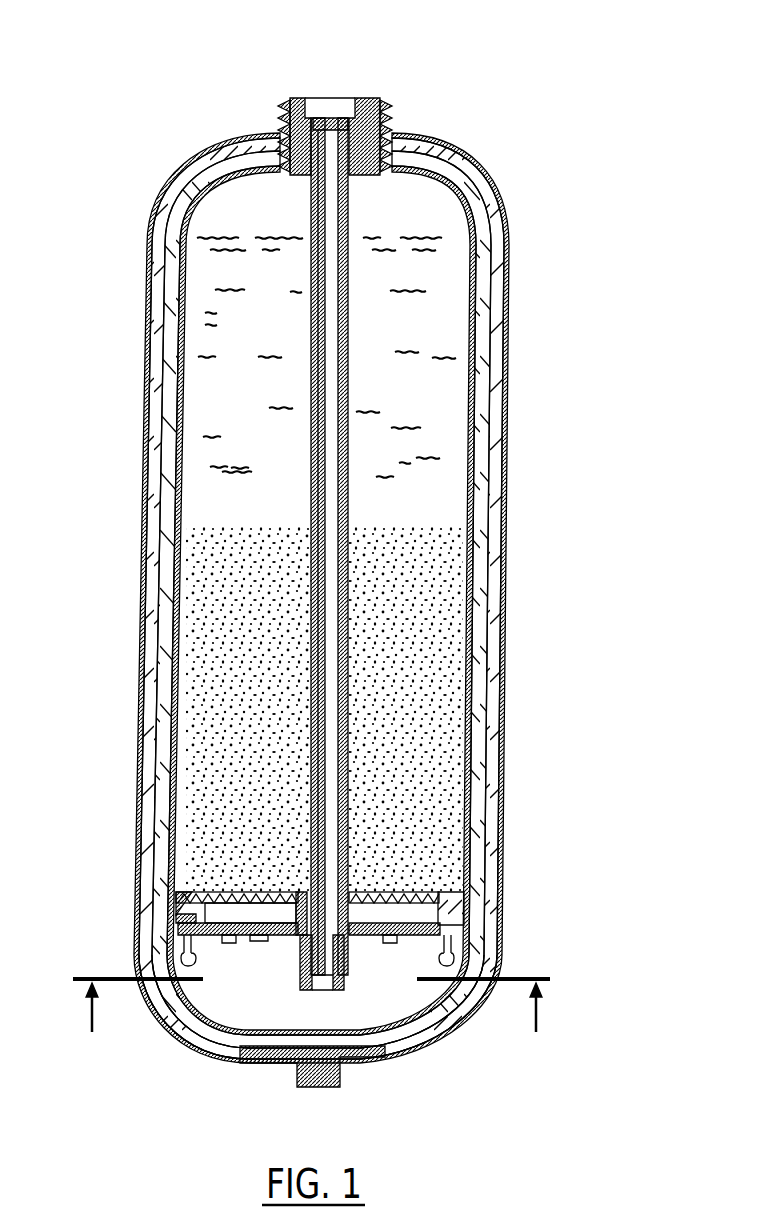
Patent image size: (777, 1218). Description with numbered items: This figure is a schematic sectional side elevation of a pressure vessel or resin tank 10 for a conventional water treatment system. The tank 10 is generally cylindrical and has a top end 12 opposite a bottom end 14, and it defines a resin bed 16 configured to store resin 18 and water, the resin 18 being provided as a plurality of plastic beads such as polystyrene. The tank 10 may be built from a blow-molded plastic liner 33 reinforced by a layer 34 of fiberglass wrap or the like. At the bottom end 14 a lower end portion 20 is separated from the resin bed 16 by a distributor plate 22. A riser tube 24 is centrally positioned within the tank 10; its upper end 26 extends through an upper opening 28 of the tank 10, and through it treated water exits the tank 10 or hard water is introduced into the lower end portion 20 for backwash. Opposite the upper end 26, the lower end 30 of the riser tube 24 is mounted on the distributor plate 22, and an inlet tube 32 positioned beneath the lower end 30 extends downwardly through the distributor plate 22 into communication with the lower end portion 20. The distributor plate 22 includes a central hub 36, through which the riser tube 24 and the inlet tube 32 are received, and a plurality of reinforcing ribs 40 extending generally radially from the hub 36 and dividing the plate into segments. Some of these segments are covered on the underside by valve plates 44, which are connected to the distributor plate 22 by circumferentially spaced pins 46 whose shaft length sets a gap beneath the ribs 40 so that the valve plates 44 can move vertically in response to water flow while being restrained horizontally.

The resin tank 10 is at (557, 137).
The top end 12 is at (448, 142).
The bottom end 14 is at (434, 1062).
The resin bed 16 is at (420, 872).
The resin 18 is at (436, 534).
The lower end portion 20 is at (445, 1008).
The distributor plate 22 is at (258, 937).
The riser tube 24 is at (345, 405).
The upper end 26 is at (323, 118).
The upper opening 28 is at (360, 128).
The lower end 30 is at (302, 890).
The inlet tube 32 is at (298, 990).
The liner 33 is at (475, 553).
The layer 34 is at (495, 625).
The central hub 36 is at (285, 890).
The reinforcing ribs 40 is at (218, 923).
The valve plates 44 is at (228, 937).
The pins 46 is at (184, 946).